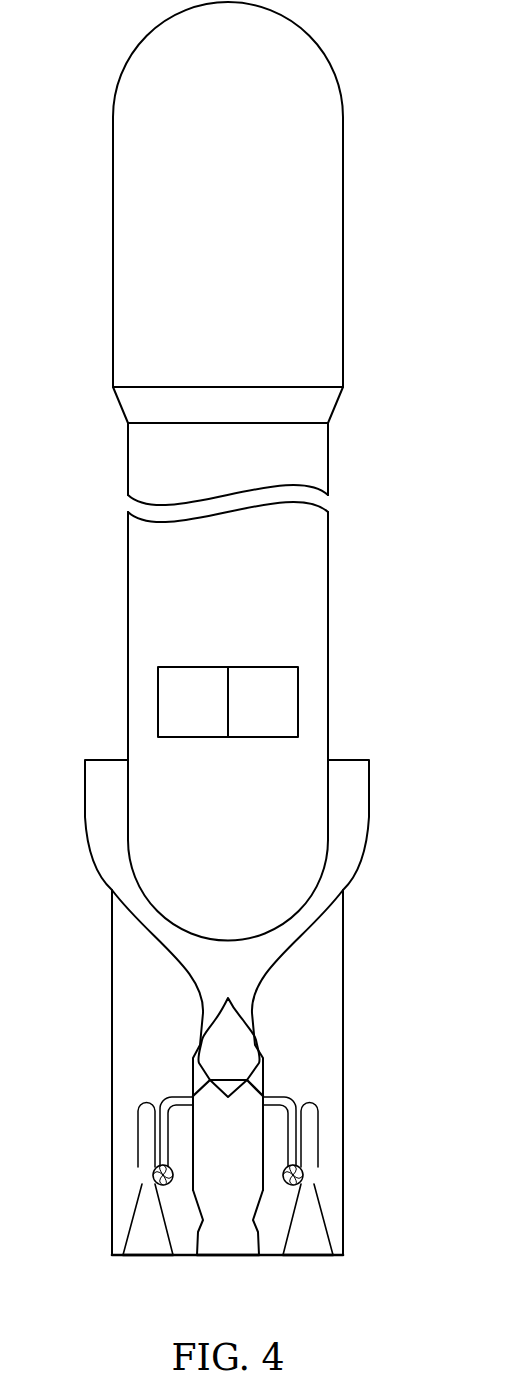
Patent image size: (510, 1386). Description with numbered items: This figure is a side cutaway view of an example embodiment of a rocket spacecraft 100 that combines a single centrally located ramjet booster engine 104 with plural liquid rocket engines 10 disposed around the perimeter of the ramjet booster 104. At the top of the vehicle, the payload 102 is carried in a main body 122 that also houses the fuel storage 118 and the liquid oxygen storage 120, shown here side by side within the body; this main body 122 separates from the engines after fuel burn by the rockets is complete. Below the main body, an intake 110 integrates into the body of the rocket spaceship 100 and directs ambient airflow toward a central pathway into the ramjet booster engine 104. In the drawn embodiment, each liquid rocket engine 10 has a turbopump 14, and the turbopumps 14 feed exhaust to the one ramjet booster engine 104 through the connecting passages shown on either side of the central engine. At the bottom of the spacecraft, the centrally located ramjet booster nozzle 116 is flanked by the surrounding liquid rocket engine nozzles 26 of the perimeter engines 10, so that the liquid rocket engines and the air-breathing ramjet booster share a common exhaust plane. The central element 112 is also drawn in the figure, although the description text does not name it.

The rocket spacecraft 100 is at (90, 541).
The payload 102 is at (253, 234).
The ramjet booster engine 104 is at (210, 1167).
The liquid rocket engine 10 is at (134, 1212).
The turbopump 14 is at (153, 1178).
The liquid rocket engine nozzle 26 is at (148, 1245).
The intake 110 is at (349, 752).
The injector 112 is at (245, 1058).
The ramjet booster nozzle 116 is at (225, 1245).
The fuel storage 118 is at (265, 673).
The liquid oxygen storage 120 is at (192, 673).
The main body 122 is at (328, 459).